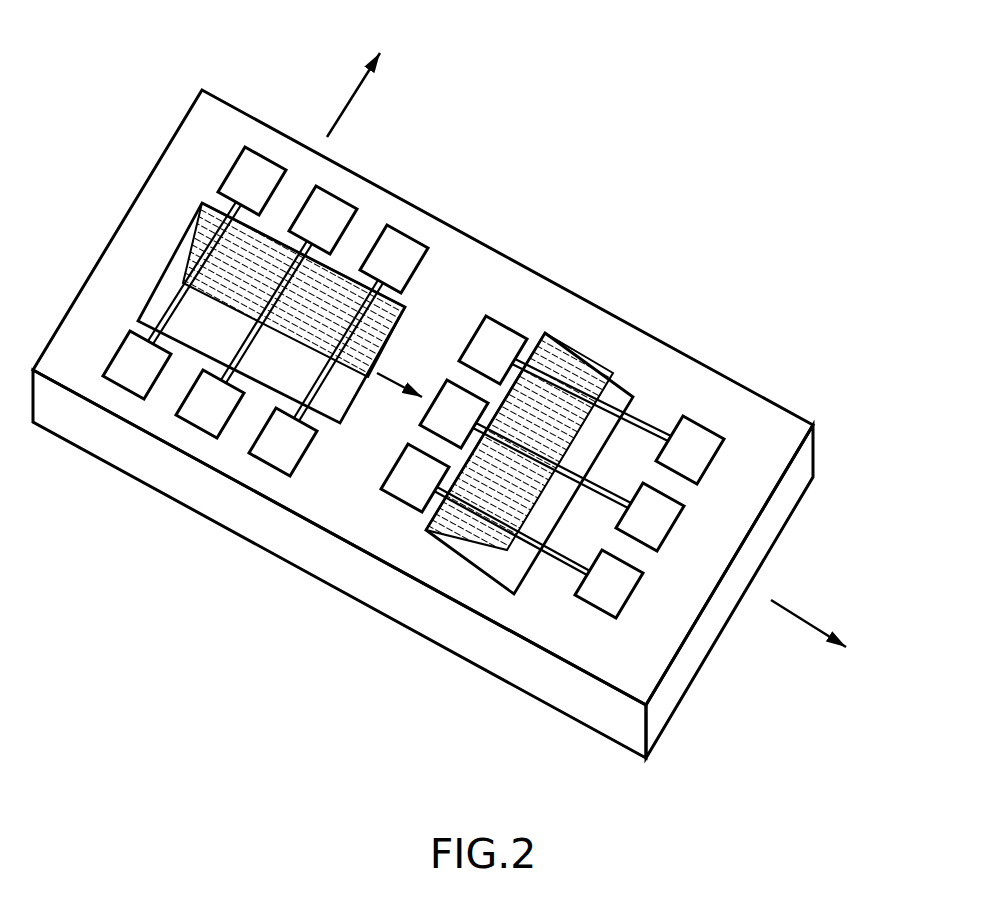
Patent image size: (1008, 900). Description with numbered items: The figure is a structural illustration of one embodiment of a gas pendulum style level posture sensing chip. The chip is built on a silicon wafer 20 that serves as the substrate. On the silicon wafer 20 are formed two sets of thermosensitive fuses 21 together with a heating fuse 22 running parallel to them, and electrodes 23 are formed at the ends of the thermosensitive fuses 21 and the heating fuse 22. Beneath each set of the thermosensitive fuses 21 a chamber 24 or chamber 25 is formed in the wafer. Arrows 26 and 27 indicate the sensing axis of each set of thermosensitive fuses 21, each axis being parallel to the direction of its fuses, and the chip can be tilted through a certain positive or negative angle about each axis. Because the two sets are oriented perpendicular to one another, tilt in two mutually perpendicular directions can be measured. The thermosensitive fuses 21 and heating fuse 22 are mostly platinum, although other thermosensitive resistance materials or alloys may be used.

The silicon wafer 20 is at (460, 622).
The thermosensitive fuses 21 is at (450, 508).
The heating fuse 22 is at (497, 430).
The electrodes 23 is at (693, 553).
The chamber 24 is at (580, 411).
The chamber 25 is at (247, 267).
The arrow 26 is at (833, 632).
The arrow 27 is at (366, 76).